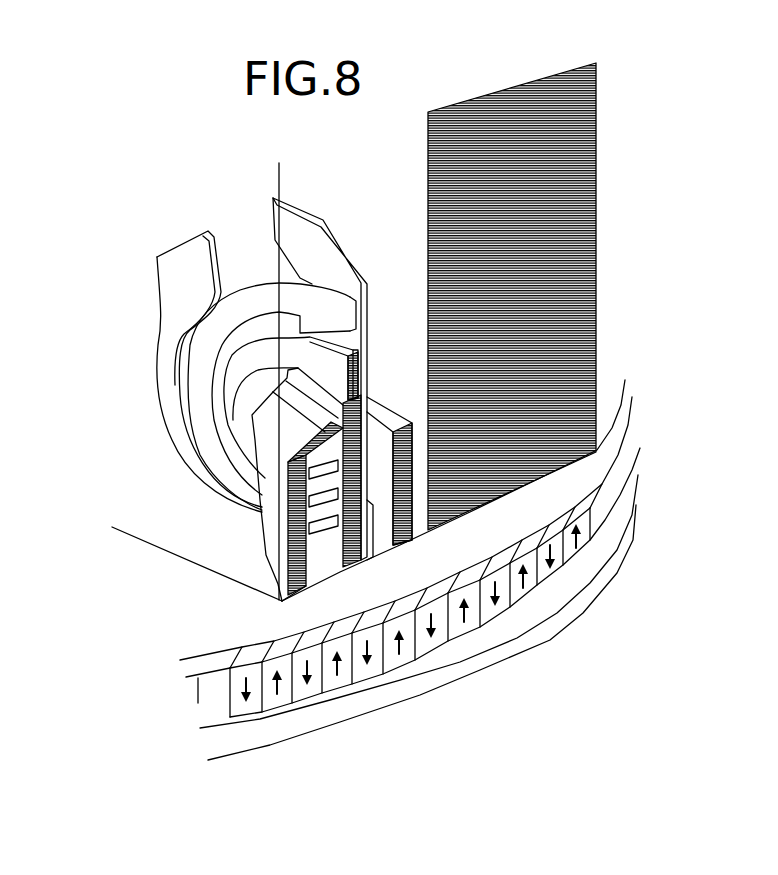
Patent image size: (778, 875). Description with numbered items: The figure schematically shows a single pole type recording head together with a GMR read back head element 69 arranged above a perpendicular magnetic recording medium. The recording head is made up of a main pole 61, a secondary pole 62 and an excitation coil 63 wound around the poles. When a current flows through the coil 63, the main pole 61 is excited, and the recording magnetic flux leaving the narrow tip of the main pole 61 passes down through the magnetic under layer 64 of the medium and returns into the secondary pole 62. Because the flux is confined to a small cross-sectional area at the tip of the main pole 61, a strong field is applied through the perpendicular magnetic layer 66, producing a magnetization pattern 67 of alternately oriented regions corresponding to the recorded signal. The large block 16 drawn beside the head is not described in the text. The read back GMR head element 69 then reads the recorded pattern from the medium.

The stator core block 16 is at (596, 350).
The main pole 61 is at (258, 470).
The secondary pole 62 is at (362, 560).
The excitation coil 63 is at (210, 339).
The magnetic under layer 64 is at (215, 738).
The perpendicular magnetic layer 66 is at (222, 653).
The magnetization pattern 67 is at (522, 583).
The read back GMR head element 69 is at (383, 548).